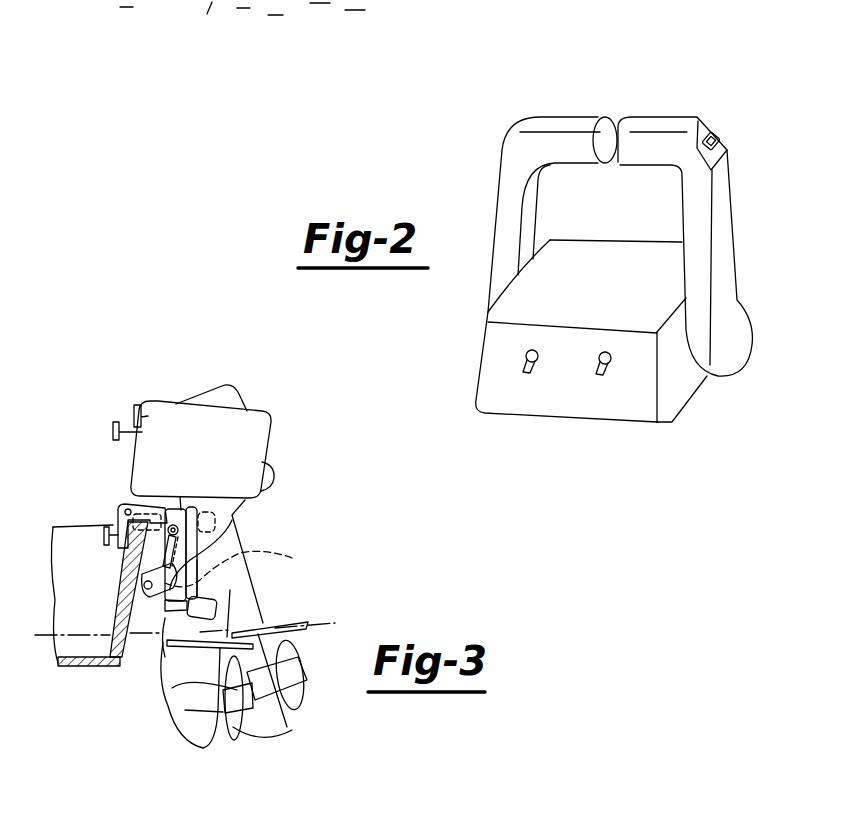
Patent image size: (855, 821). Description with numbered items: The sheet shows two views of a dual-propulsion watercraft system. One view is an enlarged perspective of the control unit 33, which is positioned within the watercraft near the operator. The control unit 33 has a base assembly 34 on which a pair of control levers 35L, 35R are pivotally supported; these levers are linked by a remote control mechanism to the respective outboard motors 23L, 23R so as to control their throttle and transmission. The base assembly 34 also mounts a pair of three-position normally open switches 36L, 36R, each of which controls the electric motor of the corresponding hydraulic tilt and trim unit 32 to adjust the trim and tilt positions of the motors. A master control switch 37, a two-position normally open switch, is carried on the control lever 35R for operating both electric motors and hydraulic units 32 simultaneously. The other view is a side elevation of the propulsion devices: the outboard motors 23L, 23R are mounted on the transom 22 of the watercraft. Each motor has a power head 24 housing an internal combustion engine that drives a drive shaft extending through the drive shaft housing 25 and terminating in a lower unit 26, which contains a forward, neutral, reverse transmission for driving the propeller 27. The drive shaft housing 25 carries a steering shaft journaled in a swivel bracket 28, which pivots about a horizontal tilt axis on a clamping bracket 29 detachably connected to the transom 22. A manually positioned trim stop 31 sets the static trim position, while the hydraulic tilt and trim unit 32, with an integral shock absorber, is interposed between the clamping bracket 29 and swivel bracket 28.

In FIG. 3, the transom 22 is at (127, 579).
In FIG. 3, the outboard motor 23L is at (180, 422).
In FIG. 3, the outboard motor 23R is at (243, 389).
In FIG. 3, the power head 24 is at (260, 433).
In FIG. 3, the drive shaft housing 25 is at (236, 517).
In FIG. 3, the lower unit 26 is at (182, 718).
In FIG. 3, the propeller 27 is at (276, 732).
In FIG. 3, the swivel bracket 28 is at (183, 514).
In FIG. 3, the clamping bracket 29 is at (121, 514).
In FIG. 3, the trim stop 31 is at (244, 567).
In FIG. 3, the hydraulic tilt and trim unit 32 is at (233, 532).
In FIG. 2, the control unit 33 is at (553, 108).
In FIG. 2, the base assembly 34 is at (570, 251).
In FIG. 2, the control lever 35L is at (518, 152).
In FIG. 2, the control lever 35R is at (724, 197).
In FIG. 2, the three-position normally open switch 36L is at (529, 375).
In FIG. 2, the three-position normally open switch 36R is at (602, 377).
In FIG. 2, the master control switch 37 is at (714, 137).